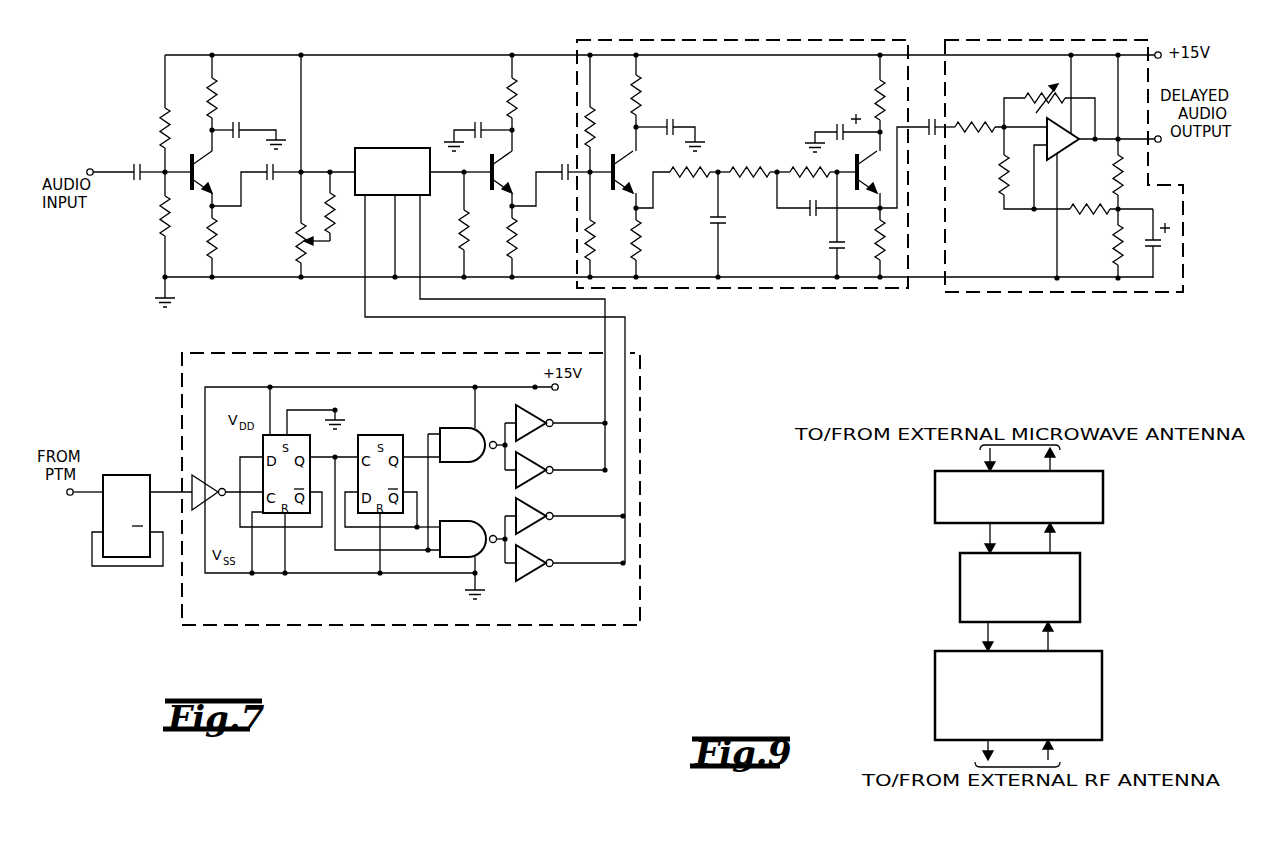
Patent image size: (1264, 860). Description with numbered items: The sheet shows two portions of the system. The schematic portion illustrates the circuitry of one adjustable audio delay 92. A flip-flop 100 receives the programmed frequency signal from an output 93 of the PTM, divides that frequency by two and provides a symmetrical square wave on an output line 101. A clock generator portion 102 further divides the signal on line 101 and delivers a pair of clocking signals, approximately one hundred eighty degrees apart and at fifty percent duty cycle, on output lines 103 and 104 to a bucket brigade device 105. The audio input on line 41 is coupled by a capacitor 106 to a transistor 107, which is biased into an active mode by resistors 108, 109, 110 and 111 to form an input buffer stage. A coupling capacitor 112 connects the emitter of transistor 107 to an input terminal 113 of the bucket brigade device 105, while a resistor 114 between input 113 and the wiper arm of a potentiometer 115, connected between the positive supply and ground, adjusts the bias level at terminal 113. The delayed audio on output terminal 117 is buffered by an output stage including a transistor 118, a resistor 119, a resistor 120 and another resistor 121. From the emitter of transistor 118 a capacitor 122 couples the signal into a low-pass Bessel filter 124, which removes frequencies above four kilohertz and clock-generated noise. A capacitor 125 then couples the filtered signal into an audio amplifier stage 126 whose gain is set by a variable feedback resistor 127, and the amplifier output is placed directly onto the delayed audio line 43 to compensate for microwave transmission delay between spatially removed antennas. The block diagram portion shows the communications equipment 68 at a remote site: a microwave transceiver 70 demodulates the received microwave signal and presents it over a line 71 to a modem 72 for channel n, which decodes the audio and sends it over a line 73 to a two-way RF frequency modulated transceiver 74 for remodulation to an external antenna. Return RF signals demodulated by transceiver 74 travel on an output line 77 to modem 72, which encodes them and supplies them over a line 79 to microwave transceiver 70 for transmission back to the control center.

In FIG. 7, the audio input line 41 is at (92, 167).
In FIG. 7, the delayed audio line 43 is at (1158, 146).
In FIG. 9, the communications equipment 68 is at (923, 569).
In FIG. 9, the microwave transceiver 70 is at (1105, 494).
In FIG. 9, the line 71 is at (983, 545).
In FIG. 9, the modem 72 is at (1082, 592).
In FIG. 9, the line 73 is at (983, 644).
In FIG. 9, the two-way RF frequency modulated transceiver 74 is at (1105, 673).
In FIG. 9, the output line 77 is at (1056, 632).
In FIG. 9, the line 79 is at (1056, 536).
In FIG. 7, the adjustable audio delay 92 is at (677, 321).
In FIG. 7, the output of PTM 93 is at (77, 497).
In FIG. 7, the flip-flop 100 is at (127, 474).
In FIG. 7, the output line 101 is at (172, 488).
In FIG. 7, the clock generator portion 102 is at (300, 353).
In FIG. 7, the output line 103 is at (362, 313).
In FIG. 7, the output line 104 is at (417, 282).
In FIG. 7, the bucket brigade device 105 is at (382, 148).
In FIG. 7, the capacitor 106 is at (134, 165).
In FIG. 7, the transistor 107 is at (207, 173).
In FIG. 7, the resistor 108 is at (162, 120).
In FIG. 7, the resistor 109 is at (162, 231).
In FIG. 7, the resistor 110 is at (218, 94).
In FIG. 7, the resistor 111 is at (218, 241).
In FIG. 7, the coupling capacitor 112 is at (270, 182).
In FIG. 7, the input terminal 113 is at (350, 170).
In FIG. 7, the resistor 114 is at (335, 223).
In FIG. 7, the potentiometer 115 is at (298, 238).
In FIG. 7, the output terminal 117 is at (443, 176).
In FIG. 7, the transistor 118 is at (508, 166).
In FIG. 7, the resistor 119 is at (497, 181).
In FIG. 7, the resistor 120 is at (520, 94).
In FIG. 7, the resistor 121 is at (520, 241).
In FIG. 7, the capacitor 122 is at (567, 184).
In FIG. 7, the low-pass Bessel filter 124 is at (577, 40).
In FIG. 7, the capacitor 125 is at (930, 116).
In FIG. 7, the audio amplifier stage 126 is at (1018, 42).
In FIG. 7, the variable feedback resistor 127 is at (1026, 92).